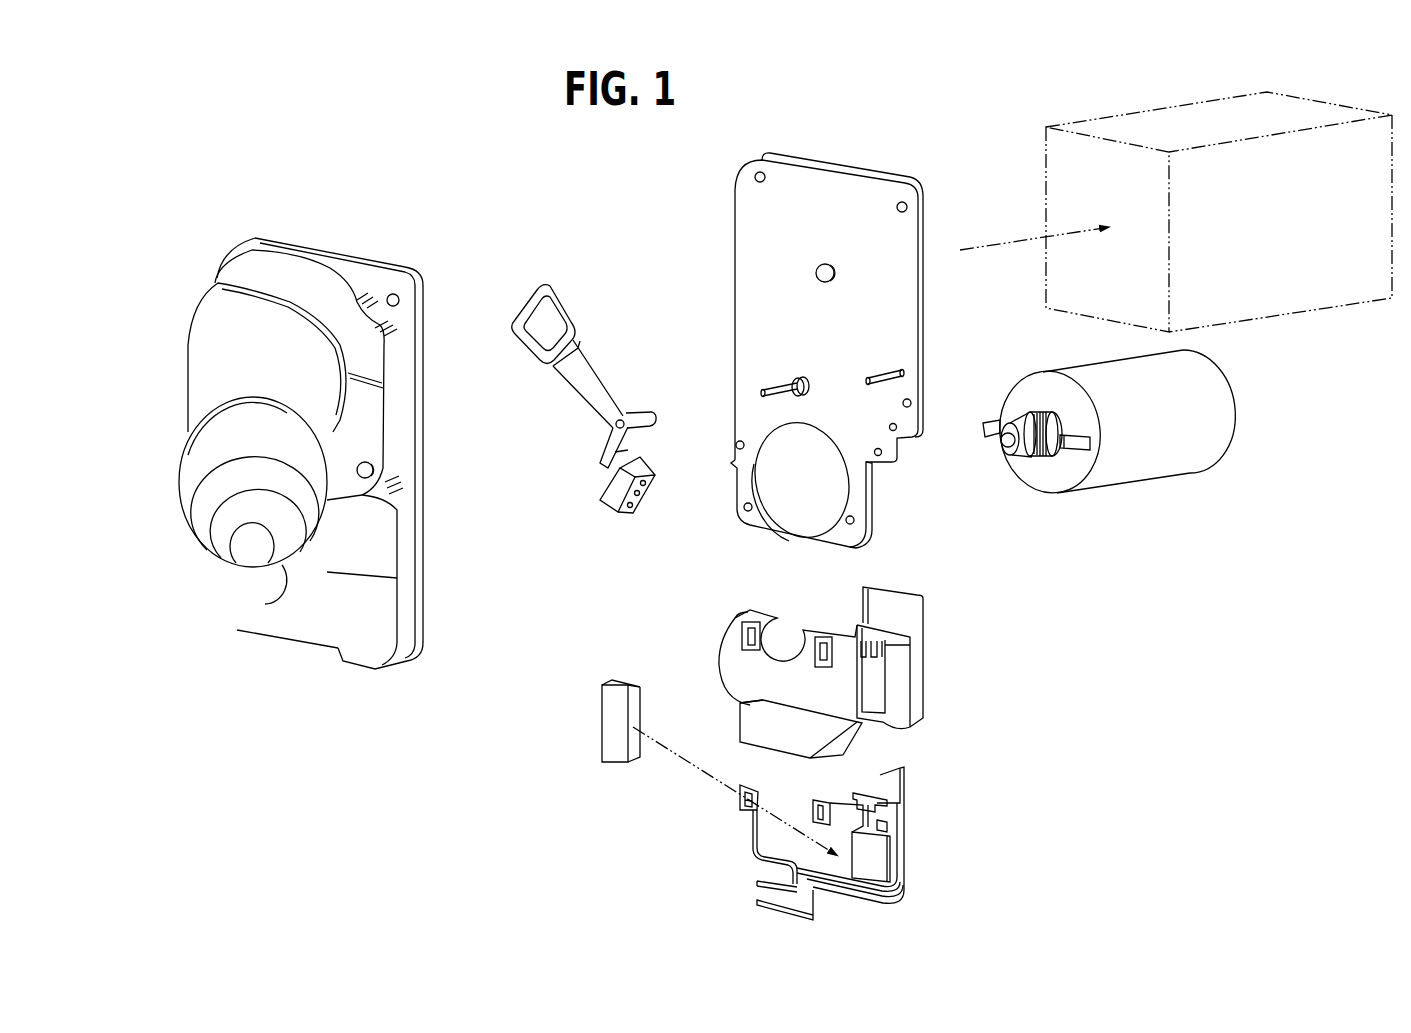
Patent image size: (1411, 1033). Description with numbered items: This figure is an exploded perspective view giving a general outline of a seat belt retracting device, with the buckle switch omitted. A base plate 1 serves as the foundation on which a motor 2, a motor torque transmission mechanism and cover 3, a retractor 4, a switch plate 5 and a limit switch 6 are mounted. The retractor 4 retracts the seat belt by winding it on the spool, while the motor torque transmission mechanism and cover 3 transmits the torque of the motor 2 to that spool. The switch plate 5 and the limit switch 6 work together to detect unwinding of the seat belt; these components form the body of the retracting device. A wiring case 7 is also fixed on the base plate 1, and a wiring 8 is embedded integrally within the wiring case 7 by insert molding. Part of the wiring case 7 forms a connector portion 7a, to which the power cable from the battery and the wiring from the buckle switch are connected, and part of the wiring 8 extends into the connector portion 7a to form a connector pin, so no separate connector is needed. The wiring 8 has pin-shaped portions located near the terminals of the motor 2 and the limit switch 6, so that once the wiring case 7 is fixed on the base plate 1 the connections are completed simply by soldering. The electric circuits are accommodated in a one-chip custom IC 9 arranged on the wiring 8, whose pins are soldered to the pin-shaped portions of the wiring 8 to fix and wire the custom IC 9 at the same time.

The base plate 1 is at (850, 155).
The motor 2 is at (1143, 485).
The motor torque transmission mechanism and cover 3 is at (344, 211).
The retractor 4 is at (1292, 115).
The switch plate 5 is at (549, 278).
The limit switch 6 is at (611, 517).
The wiring case 7 is at (927, 683).
The connector portion 7a is at (726, 718).
The wiring 8 is at (910, 858).
The custom IC 9 is at (610, 762).